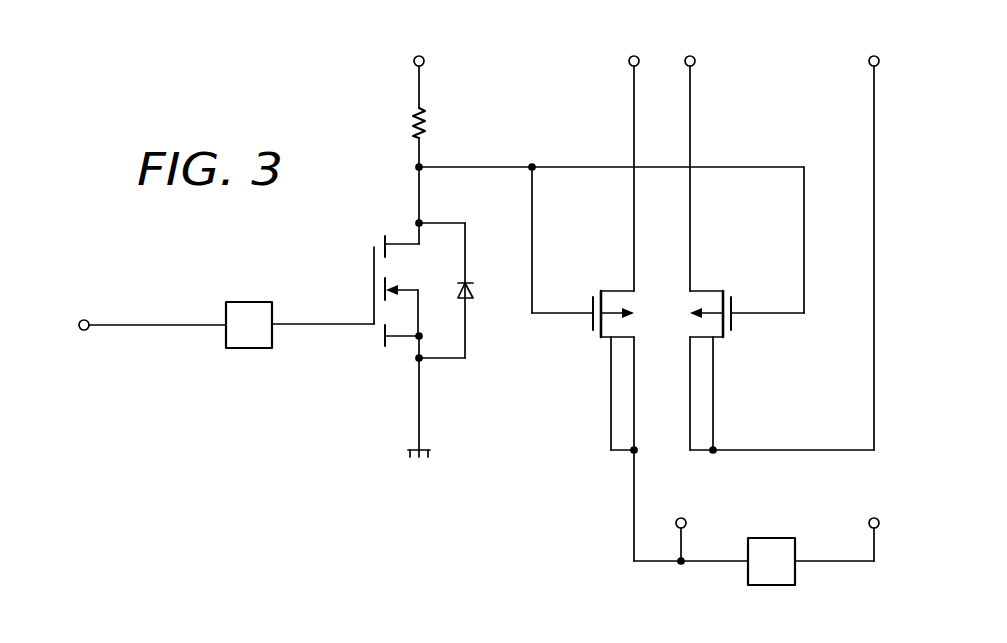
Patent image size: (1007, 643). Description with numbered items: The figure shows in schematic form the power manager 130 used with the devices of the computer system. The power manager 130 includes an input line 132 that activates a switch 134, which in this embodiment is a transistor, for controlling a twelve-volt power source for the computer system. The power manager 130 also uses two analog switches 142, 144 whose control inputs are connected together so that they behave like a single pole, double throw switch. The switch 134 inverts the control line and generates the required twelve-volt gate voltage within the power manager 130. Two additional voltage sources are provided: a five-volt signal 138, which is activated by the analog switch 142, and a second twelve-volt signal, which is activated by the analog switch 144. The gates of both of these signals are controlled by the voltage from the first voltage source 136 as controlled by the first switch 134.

The power manager 130 is at (493, 472).
The input line 132 is at (137, 327).
The switch 134 is at (374, 258).
The first voltage source 136 is at (419, 84).
The 5V signal 138 is at (634, 86).
The analog switch 142 is at (611, 422).
The analog switch 144 is at (733, 322).